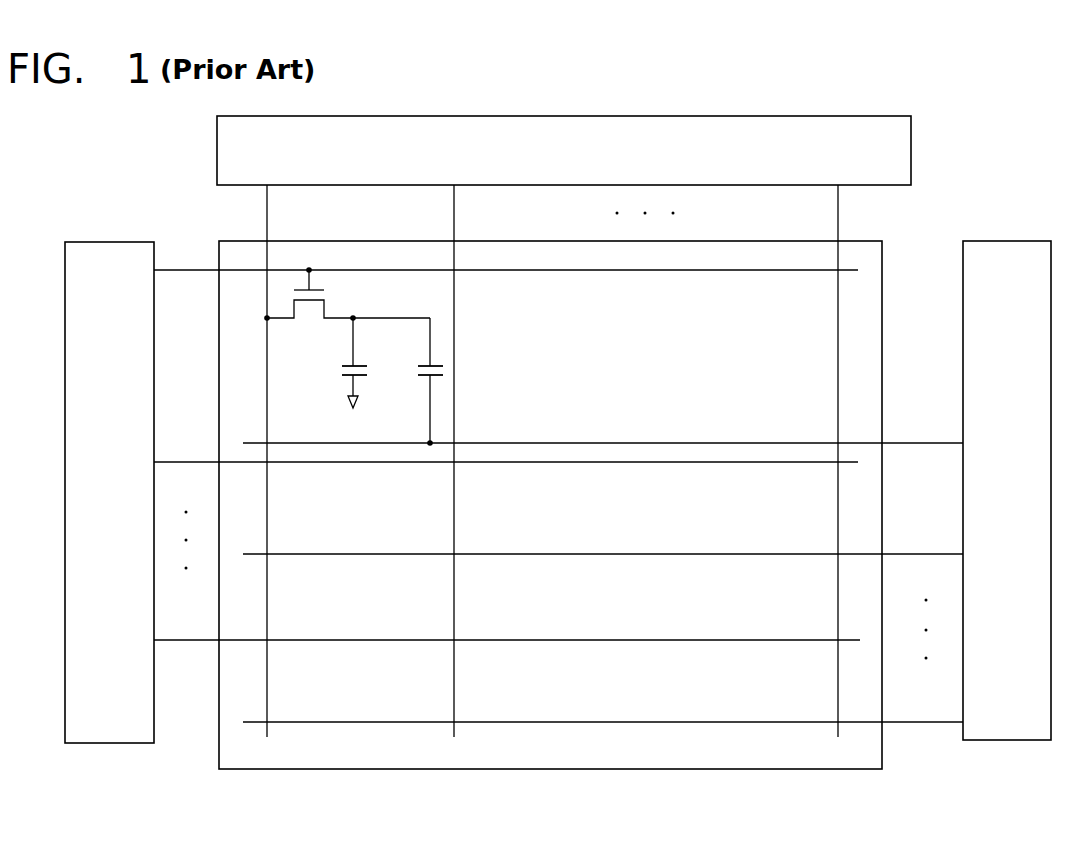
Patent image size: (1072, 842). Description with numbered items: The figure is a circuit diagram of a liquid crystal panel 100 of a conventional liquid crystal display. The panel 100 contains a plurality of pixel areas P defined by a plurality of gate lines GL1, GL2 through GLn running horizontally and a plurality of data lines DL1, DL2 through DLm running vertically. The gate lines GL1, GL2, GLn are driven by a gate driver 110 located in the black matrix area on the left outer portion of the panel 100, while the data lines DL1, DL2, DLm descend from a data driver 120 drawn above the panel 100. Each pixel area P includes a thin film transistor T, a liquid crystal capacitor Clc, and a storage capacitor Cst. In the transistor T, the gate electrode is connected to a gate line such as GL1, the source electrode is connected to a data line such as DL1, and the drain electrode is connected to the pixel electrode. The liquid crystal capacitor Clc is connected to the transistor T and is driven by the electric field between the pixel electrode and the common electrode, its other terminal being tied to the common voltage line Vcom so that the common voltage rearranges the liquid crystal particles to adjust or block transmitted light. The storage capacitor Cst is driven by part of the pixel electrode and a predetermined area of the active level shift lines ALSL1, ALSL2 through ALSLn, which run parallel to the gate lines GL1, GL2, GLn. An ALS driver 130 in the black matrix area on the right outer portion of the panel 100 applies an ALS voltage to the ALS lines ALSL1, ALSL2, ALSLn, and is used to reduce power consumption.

The liquid crystal panel 100 is at (712, 240).
The gate driver 110 is at (122, 242).
The data driver 120 is at (567, 115).
The ALS driver 130 is at (1000, 241).
The pixel area P is at (353, 347).
The thin film transistor T is at (348, 304).
The liquid crystal capacitor Clc is at (337, 363).
The storage capacitor Cst is at (413, 380).
The common voltage line Vcom is at (352, 425).
The gate line GL1 is at (506, 257).
The gate line GL2 is at (506, 449).
The gate line GLn is at (507, 627).
The data line DL1 is at (287, 461).
The data line DL2 is at (476, 461).
The data line DLm is at (862, 461).
The active level shift line ALSL1 is at (603, 427).
The active level shift line ALSL2 is at (603, 539).
The active level shift line ALSLn is at (603, 706).